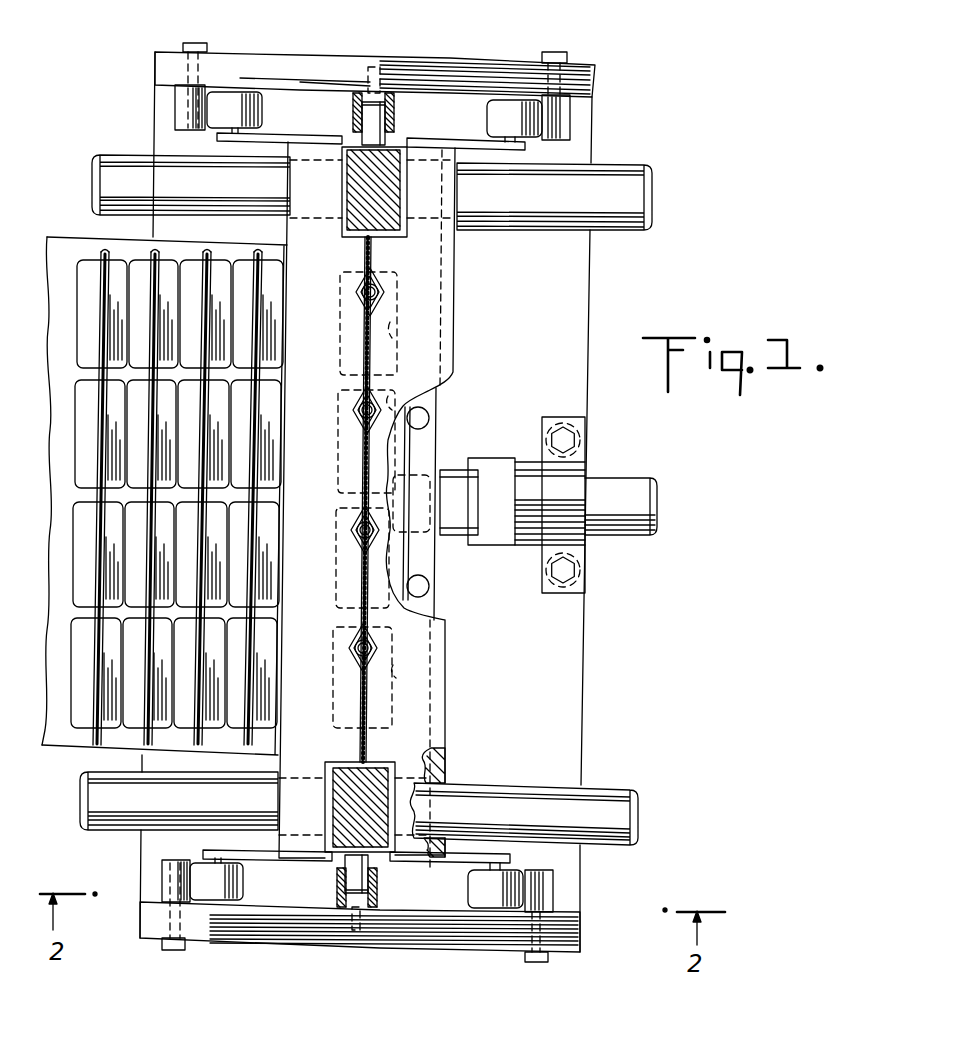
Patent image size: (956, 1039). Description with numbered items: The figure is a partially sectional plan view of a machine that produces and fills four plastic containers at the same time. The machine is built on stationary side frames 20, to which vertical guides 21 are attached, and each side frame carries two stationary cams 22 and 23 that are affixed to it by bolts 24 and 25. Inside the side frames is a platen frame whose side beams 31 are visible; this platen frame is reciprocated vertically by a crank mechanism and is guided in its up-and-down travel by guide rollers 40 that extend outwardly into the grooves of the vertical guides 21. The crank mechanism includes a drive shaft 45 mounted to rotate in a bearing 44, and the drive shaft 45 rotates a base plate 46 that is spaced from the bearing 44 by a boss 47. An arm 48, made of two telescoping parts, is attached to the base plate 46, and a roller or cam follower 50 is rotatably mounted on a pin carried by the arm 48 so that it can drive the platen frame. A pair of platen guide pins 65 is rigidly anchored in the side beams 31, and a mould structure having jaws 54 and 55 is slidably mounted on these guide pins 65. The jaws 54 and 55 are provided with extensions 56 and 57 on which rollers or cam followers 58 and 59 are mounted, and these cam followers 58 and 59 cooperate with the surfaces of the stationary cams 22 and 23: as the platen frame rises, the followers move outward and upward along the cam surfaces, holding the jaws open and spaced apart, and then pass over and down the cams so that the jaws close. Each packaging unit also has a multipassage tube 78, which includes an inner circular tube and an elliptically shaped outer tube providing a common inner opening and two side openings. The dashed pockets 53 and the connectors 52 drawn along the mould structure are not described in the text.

The stationary side frame 20 is at (479, 62).
The vertical guide 21 is at (352, 112).
The cam 22 is at (572, 118).
The cam 23 is at (175, 103).
The bolt 24 is at (555, 50).
The bolt 25 is at (205, 45).
The side beam 31 is at (348, 175).
The guide roller 40 is at (365, 509).
The bearing 44 is at (565, 478).
The drive shaft 45 is at (605, 520).
The base plate 46 is at (490, 465).
The boss 47 is at (528, 545).
The arm 48 is at (448, 518).
The cam follower 50 is at (418, 475).
The connector 52 is at (388, 322).
The pocket 53 is at (345, 325).
The jaw 54 is at (455, 302).
The jaw 55 is at (295, 522).
The extension 56 is at (470, 143).
The extension 57 is at (280, 135).
The cam follower 58 is at (507, 108).
The cam follower 59 is at (235, 100).
The platen guide pin 65 is at (110, 165).
The multipassage tube 78 is at (378, 292).